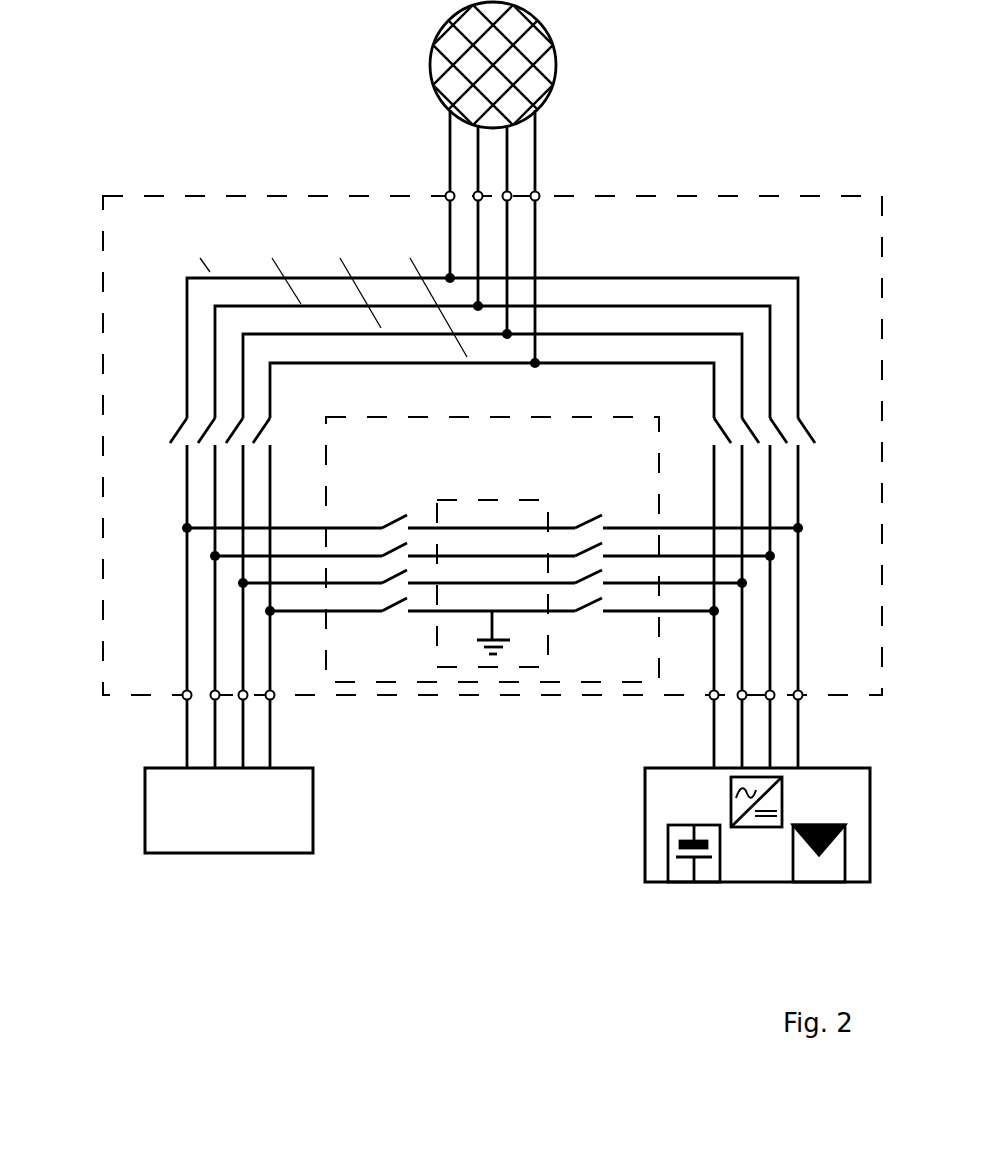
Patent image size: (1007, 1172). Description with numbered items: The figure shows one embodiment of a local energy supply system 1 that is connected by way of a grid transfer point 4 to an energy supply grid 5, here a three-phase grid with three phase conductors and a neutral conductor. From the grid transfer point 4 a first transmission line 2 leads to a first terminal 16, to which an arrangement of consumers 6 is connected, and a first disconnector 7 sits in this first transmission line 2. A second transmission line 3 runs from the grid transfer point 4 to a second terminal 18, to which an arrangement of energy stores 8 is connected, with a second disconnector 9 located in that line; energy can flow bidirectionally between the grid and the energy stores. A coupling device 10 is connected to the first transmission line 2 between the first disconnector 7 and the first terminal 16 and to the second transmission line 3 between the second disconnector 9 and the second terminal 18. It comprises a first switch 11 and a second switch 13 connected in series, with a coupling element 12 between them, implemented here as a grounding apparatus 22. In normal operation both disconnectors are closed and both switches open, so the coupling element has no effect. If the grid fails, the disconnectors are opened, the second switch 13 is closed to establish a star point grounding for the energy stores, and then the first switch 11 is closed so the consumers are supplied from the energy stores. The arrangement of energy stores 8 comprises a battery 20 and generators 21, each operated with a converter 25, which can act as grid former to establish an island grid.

The local energy supply system 1 is at (882, 181).
The first transmission line 2 is at (177, 348).
The second transmission line 3 is at (807, 352).
The grid transfer point 4 is at (550, 186).
The energy supply grid 5 is at (556, 34).
The arrangement of consumers 6 is at (131, 810).
The first disconnector 7 is at (160, 441).
The arrangement of energy stores 8 is at (640, 830).
The second disconnector 9 is at (822, 436).
The coupling device 10 is at (405, 683).
The first switch 11 is at (388, 513).
The coupling element 12 is at (485, 493).
The second switch 13 is at (603, 505).
The first terminal 16 is at (178, 708).
The second terminal 18 is at (705, 705).
The battery 20 is at (690, 885).
The generators 21 is at (826, 885).
The grounding apparatus 22 is at (483, 652).
The converter 25 is at (770, 833).